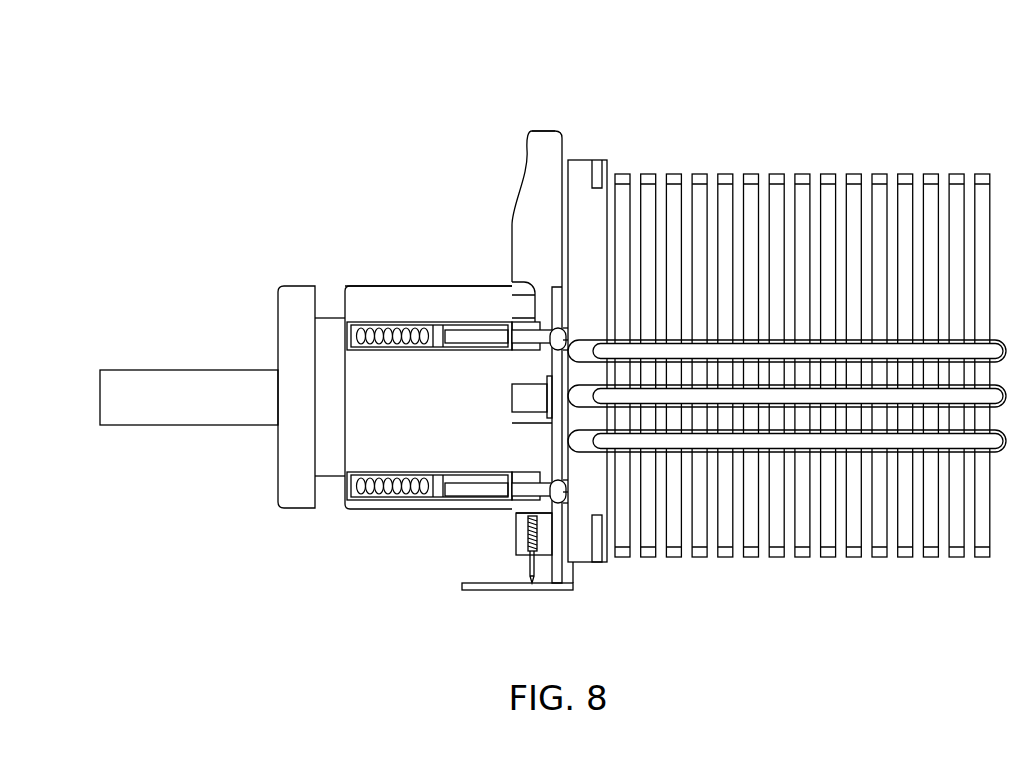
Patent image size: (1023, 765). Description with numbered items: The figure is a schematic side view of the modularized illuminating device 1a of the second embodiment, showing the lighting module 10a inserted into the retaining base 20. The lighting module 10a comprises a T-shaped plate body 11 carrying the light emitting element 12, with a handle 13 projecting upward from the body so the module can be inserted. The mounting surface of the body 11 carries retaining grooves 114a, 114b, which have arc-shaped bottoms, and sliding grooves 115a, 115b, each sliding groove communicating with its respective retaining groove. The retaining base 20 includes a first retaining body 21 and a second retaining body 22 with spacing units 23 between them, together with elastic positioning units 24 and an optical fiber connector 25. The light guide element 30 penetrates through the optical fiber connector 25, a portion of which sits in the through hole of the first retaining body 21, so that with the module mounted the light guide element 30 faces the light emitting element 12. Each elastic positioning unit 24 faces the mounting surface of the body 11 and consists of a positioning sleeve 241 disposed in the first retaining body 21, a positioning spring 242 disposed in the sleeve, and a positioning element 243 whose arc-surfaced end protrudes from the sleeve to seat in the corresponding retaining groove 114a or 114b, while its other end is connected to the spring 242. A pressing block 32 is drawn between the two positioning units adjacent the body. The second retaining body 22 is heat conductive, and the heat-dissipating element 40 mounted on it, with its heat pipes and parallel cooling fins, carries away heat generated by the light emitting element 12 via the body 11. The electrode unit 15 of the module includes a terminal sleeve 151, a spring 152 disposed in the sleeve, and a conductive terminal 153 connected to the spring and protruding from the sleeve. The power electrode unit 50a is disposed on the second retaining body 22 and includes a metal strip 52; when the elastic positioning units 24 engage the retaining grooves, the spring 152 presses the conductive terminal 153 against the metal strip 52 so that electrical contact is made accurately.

The modularized illuminating device 1a is at (1016, 63).
The lighting module 10a is at (543, 118).
The body 11 is at (558, 369).
The light emitting element 12 is at (548, 418).
The handle 13 is at (538, 165).
The electrode unit 15 is at (552, 540).
The retaining base 20 is at (412, 172).
The first retaining body 21 is at (382, 302).
The second retaining body 22 is at (580, 172).
The spacing unit 23 is at (520, 308).
The elastic positioning unit 24 is at (420, 360).
The optical fiber connector 25 is at (268, 309).
The light guide element 30 is at (143, 360).
The pressing block 32 is at (528, 397).
The heat-dissipating element 40 is at (806, 160).
The power electrode unit 50a is at (556, 600).
The metal strip 52 is at (544, 592).
The retaining groove 114a is at (565, 335).
The retaining groove 114b is at (558, 485).
The sliding groove 115a is at (575, 350).
The sliding groove 115b is at (561, 500).
The terminal sleeve 151 is at (520, 521).
The spring 152 is at (531, 538).
The conductive terminal 153 is at (530, 578).
The positioning sleeve 241 is at (362, 322).
The positioning spring 242 is at (412, 322).
The positioning element 243 is at (492, 322).